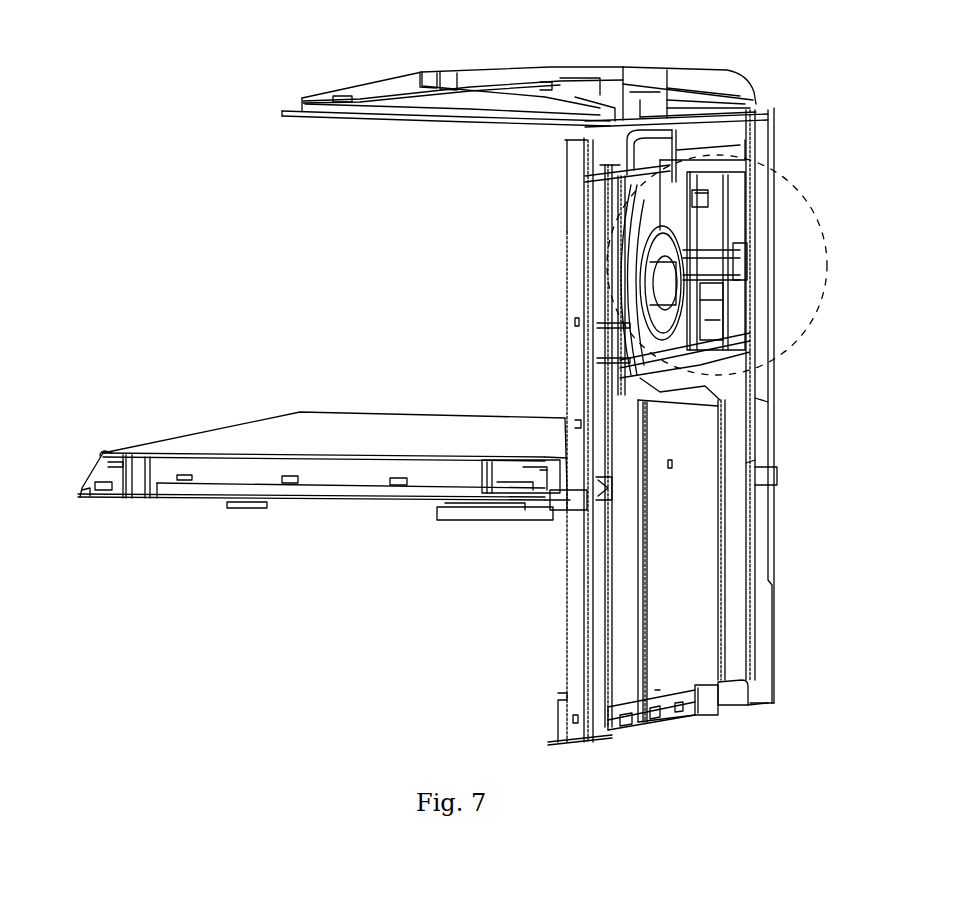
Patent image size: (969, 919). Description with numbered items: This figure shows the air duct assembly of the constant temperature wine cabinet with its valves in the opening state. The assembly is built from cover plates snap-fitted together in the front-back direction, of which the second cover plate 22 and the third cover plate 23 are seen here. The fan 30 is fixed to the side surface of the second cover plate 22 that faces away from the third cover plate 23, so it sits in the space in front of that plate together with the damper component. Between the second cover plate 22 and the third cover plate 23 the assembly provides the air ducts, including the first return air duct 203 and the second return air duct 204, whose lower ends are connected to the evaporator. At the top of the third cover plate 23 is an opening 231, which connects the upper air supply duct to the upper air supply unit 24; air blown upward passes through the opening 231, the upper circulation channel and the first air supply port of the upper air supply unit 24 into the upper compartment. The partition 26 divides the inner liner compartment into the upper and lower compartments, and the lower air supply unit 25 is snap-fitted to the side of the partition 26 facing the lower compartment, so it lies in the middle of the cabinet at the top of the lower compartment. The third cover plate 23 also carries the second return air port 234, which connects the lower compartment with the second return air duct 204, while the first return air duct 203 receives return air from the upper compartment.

The second cover plate 22 is at (730, 561).
The third cover plate 23 is at (541, 440).
The upper air supply unit 24 is at (437, 80).
The lower air supply unit 25 is at (332, 515).
The partition 26 is at (333, 425).
The fan 30 is at (730, 270).
The first return air duct 203 is at (631, 429).
The second return air duct 204 is at (806, 405).
The opening 231 is at (717, 77).
The second return air port 234 is at (696, 719).